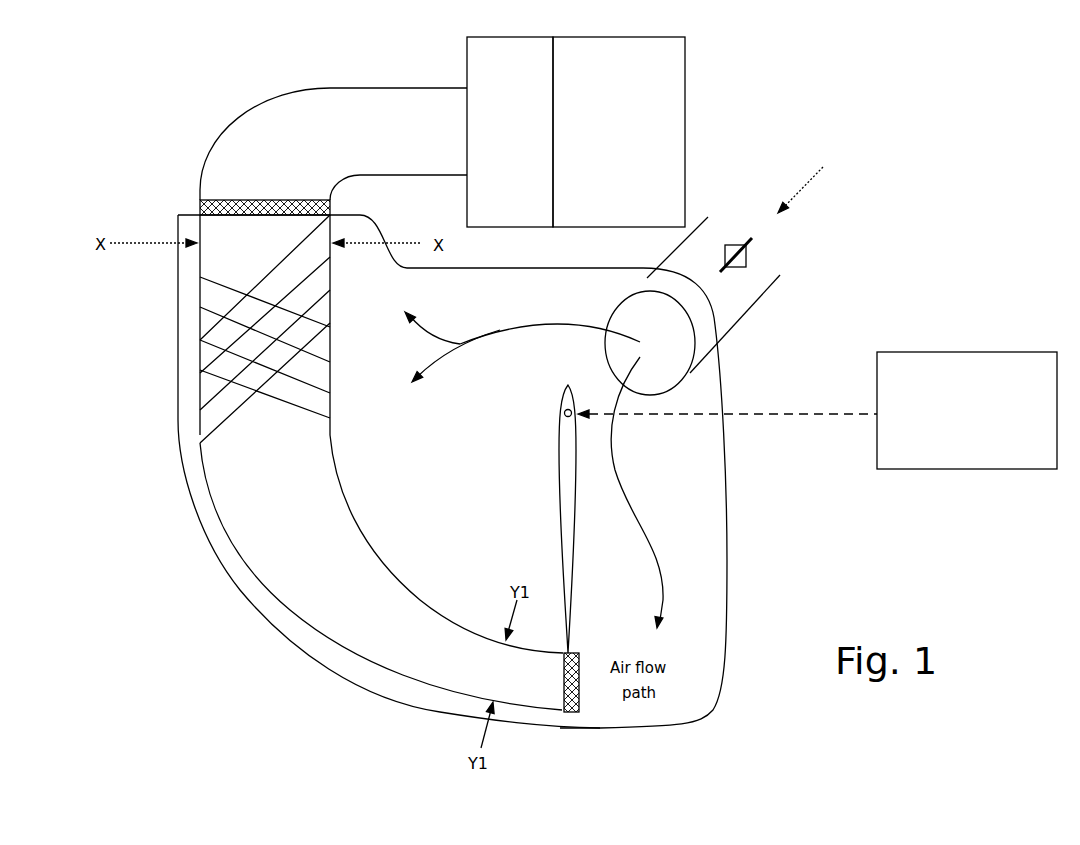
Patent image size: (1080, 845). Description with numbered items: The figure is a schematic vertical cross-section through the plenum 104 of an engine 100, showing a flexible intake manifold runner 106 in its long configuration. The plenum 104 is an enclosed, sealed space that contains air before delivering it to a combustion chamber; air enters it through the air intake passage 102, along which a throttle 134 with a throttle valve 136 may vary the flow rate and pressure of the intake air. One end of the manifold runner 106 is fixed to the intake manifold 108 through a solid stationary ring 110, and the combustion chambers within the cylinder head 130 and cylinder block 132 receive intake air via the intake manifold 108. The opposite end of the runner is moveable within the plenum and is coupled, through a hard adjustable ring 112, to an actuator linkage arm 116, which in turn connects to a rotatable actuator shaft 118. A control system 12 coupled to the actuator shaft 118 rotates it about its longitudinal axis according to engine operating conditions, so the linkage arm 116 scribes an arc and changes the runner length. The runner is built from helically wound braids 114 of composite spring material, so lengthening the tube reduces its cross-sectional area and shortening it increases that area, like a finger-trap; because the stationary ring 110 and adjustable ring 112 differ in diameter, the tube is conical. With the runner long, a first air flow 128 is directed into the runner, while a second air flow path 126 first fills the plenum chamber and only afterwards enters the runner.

The engine 100 is at (82, 131).
The air intake passage 102 is at (675, 345).
The plenum 104 is at (205, 525).
The flexible intake manifold runner 106 is at (200, 437).
The intake manifold 108 is at (333, 144).
The stationary ring 110 is at (210, 200).
The hard adjustable ring 112 is at (565, 687).
The helically wound braids 114 is at (218, 327).
The actuator linkage arm 116 is at (566, 507).
The actuator shaft 118 is at (563, 413).
The second air flow path 126 is at (548, 328).
The first air flow 128 is at (613, 452).
The cylinder head 130 is at (497, 36).
The cylinder block 132 is at (672, 36).
The throttle 134 is at (735, 243).
The throttle valve 136 is at (752, 243).
The control system 12 is at (817, 410).